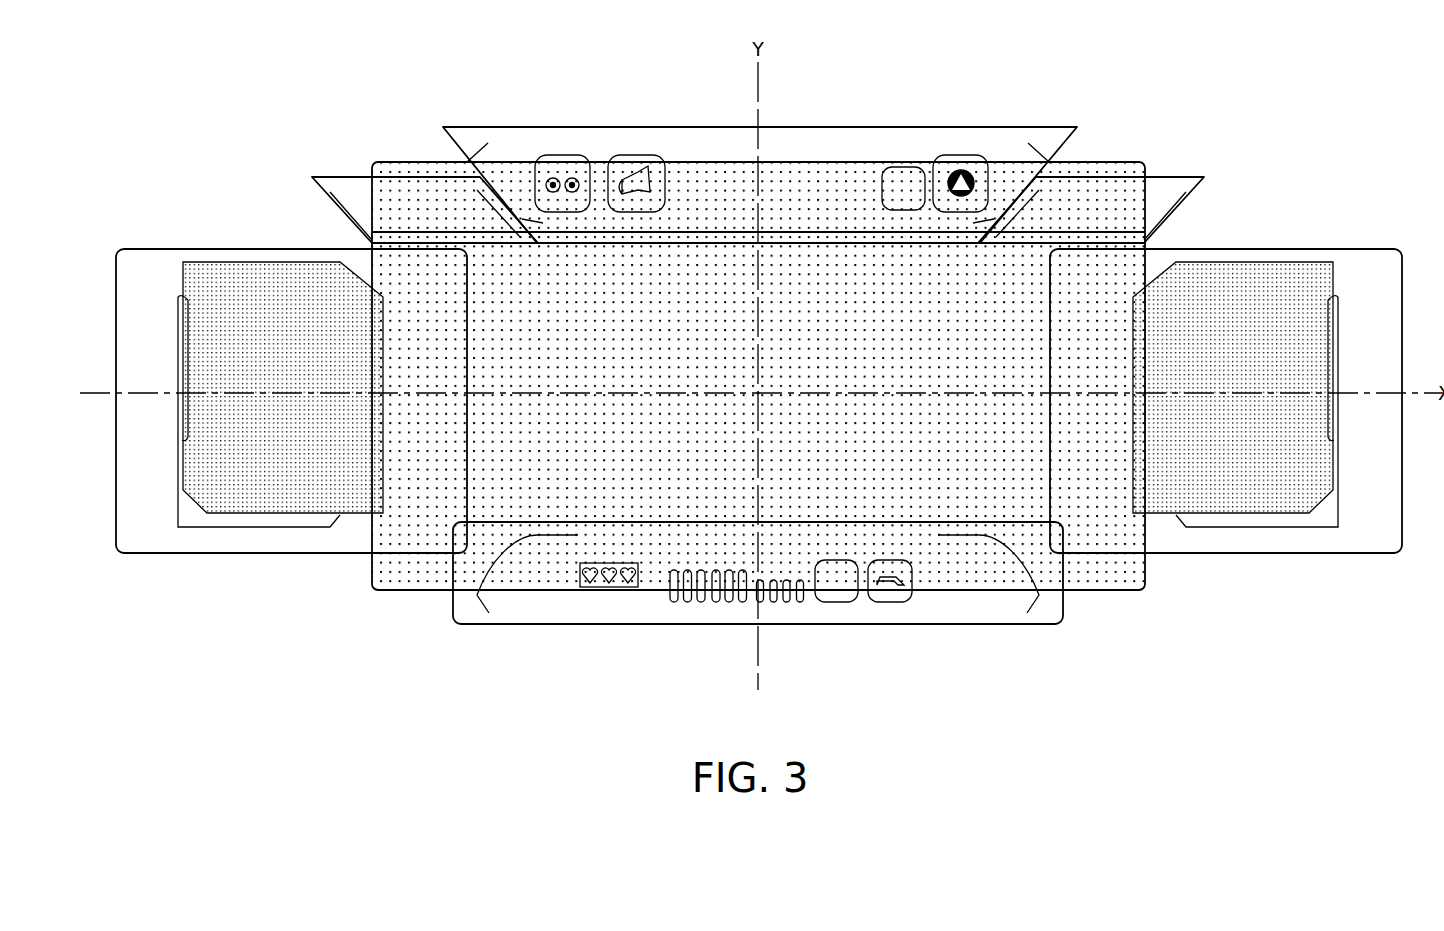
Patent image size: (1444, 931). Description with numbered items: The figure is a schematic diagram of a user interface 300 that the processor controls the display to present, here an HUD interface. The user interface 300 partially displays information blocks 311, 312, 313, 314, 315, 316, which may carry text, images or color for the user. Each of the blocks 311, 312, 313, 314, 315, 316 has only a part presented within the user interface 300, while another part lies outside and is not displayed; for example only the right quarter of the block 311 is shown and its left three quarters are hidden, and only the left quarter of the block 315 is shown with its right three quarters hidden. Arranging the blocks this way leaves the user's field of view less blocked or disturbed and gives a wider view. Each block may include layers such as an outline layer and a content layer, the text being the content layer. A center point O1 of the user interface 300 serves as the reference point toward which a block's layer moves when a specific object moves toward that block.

The user interface 300 is at (398, 591).
The block 311 is at (162, 249).
The block 312 is at (342, 177).
The block 313 is at (522, 127).
The block 314 is at (1168, 177).
The block 315 is at (1354, 249).
The block 316 is at (1015, 626).
The center point O1 is at (760, 392).